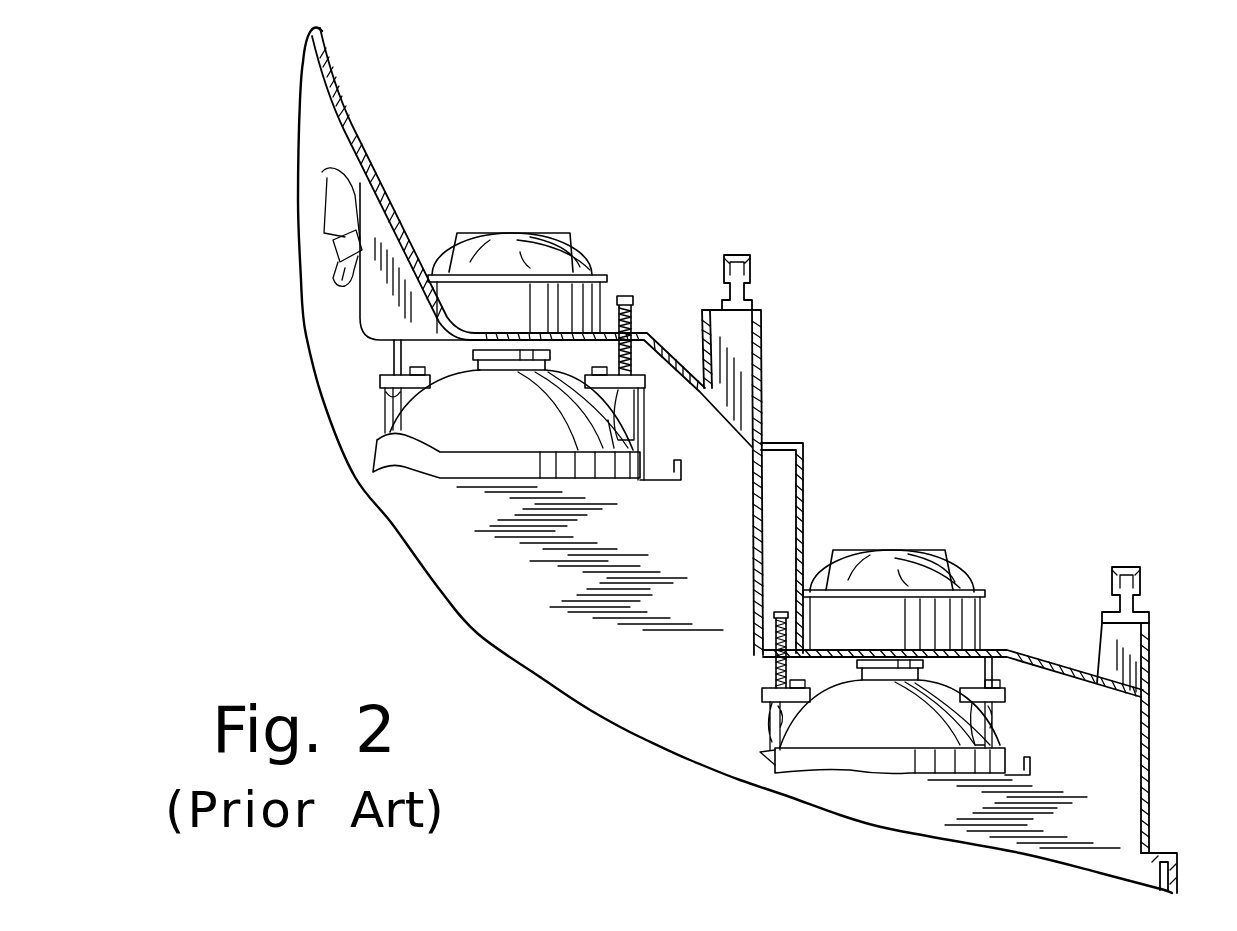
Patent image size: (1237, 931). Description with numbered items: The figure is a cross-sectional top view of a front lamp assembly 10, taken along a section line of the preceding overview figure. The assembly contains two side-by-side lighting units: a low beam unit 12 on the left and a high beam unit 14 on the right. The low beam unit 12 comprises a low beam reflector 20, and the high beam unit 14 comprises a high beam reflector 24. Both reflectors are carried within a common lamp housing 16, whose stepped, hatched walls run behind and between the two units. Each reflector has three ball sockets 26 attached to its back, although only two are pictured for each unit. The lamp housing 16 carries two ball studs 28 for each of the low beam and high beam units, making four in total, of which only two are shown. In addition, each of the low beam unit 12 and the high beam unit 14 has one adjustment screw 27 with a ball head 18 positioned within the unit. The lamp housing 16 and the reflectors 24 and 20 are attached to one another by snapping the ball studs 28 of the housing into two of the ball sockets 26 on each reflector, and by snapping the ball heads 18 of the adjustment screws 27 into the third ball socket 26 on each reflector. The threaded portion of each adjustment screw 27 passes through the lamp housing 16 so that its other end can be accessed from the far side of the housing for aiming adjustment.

The front lamp assembly 10 is at (952, 402).
The low beam unit 12 is at (452, 538).
The high beam unit 14 is at (893, 793).
The lamp housing 16 is at (1043, 652).
The ball head 18 is at (637, 440).
The low beam reflector 20 is at (527, 410).
The high beam reflector 24 is at (887, 715).
The ball socket 26 is at (378, 380).
The adjustment screw 27 is at (632, 300).
The ball stud 28 is at (393, 354).